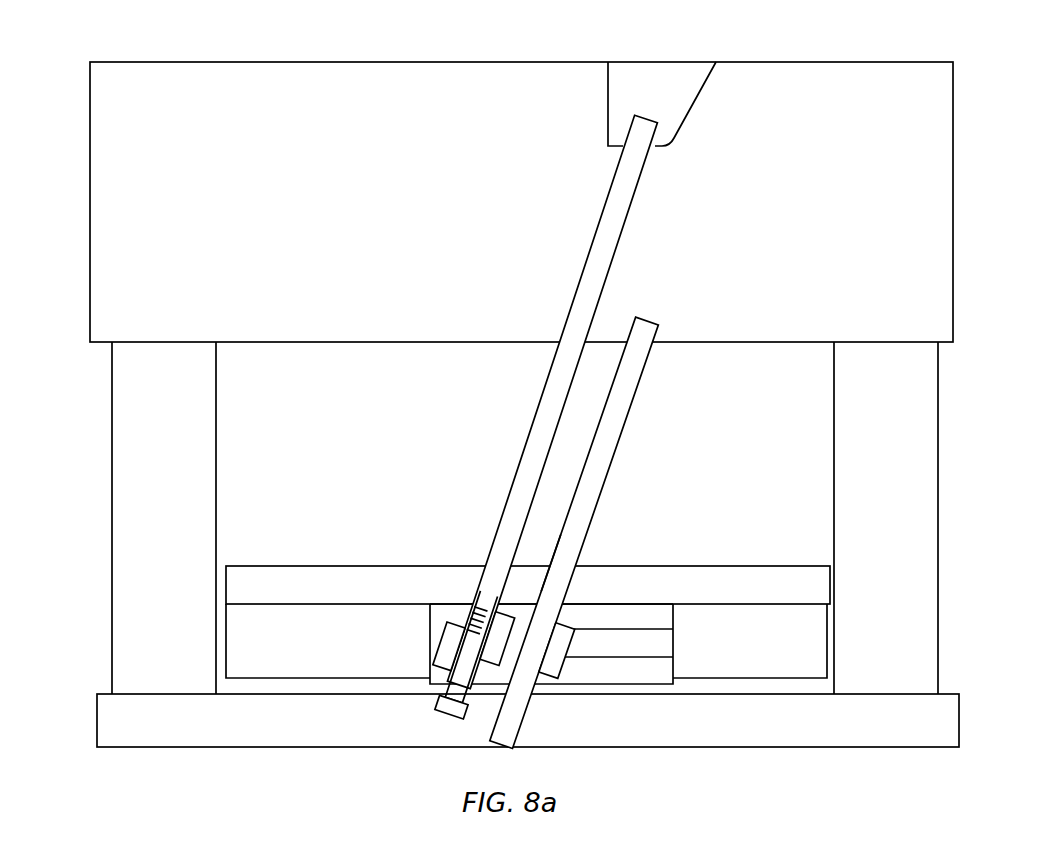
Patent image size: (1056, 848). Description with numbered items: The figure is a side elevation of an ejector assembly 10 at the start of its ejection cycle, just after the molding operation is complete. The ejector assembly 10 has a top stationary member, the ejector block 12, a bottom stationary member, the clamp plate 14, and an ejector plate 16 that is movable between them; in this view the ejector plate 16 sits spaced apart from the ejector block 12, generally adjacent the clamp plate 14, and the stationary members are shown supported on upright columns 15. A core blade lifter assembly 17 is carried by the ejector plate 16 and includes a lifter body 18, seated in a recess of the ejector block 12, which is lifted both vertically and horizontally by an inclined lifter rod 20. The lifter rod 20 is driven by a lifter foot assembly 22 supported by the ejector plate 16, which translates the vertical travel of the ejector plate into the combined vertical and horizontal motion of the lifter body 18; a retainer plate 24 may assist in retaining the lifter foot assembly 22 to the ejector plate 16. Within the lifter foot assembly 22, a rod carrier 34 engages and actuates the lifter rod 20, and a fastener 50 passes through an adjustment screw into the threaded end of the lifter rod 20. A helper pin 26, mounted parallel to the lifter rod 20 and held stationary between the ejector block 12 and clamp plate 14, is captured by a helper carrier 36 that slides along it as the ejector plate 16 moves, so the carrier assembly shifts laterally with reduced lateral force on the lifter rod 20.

The ejector assembly 10 is at (956, 124).
The ejector block 12 is at (455, 62).
The clamp plate 14 is at (953, 692).
The support columns 15 is at (162, 409).
The ejector plate 16 is at (737, 603).
The core blade lifter assembly 17 is at (586, 561).
The lifter body 18 is at (650, 62).
The lifter rod 20 is at (521, 460).
The lifter foot assembly 22 is at (459, 602).
The retainer plate 24 is at (672, 566).
The helper pin 26 is at (571, 507).
The rod carrier 34 is at (446, 602).
The helper carrier 36 is at (513, 605).
The fastener 50 is at (453, 712).